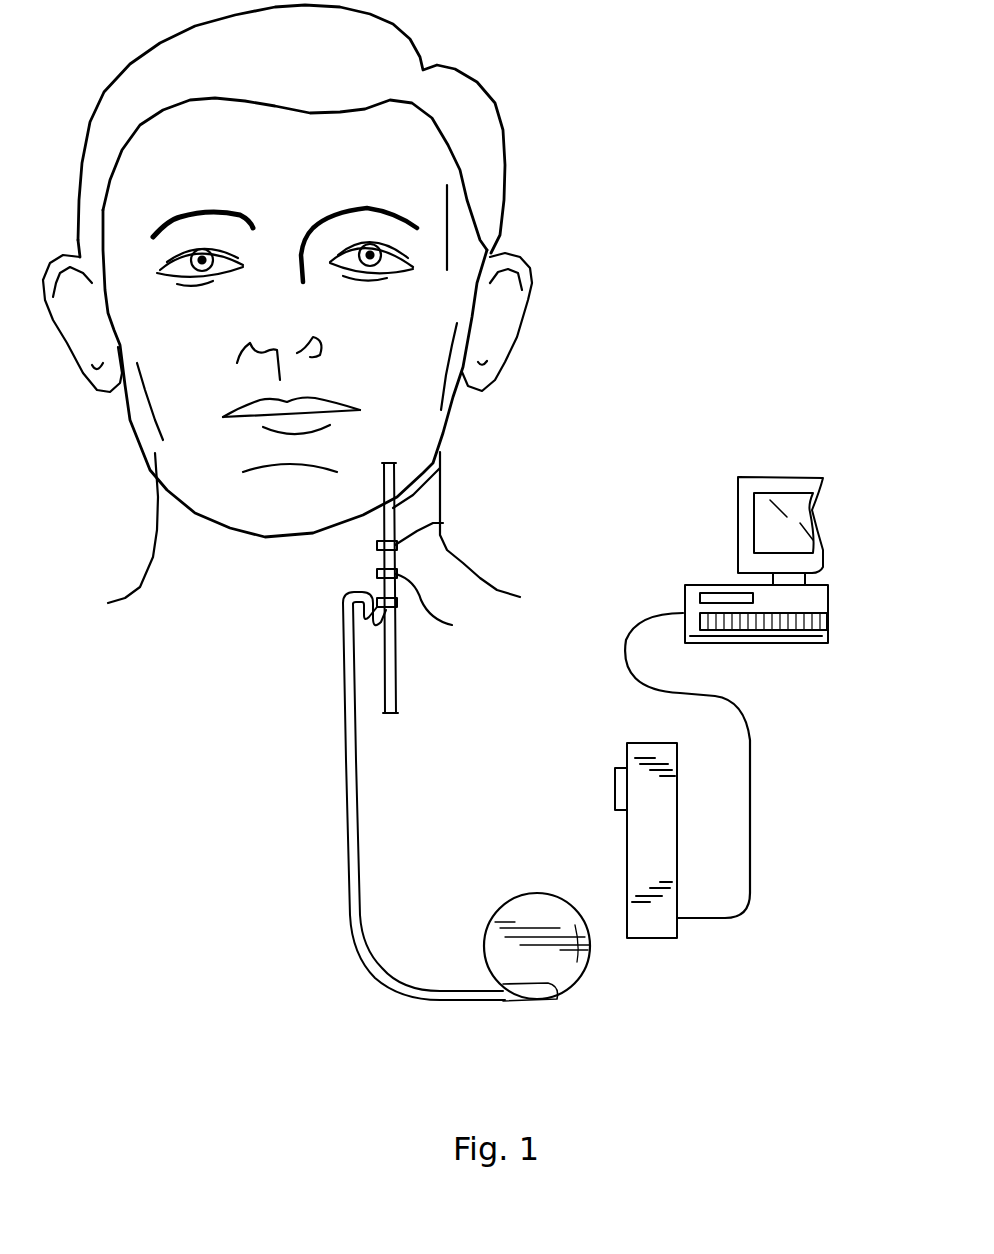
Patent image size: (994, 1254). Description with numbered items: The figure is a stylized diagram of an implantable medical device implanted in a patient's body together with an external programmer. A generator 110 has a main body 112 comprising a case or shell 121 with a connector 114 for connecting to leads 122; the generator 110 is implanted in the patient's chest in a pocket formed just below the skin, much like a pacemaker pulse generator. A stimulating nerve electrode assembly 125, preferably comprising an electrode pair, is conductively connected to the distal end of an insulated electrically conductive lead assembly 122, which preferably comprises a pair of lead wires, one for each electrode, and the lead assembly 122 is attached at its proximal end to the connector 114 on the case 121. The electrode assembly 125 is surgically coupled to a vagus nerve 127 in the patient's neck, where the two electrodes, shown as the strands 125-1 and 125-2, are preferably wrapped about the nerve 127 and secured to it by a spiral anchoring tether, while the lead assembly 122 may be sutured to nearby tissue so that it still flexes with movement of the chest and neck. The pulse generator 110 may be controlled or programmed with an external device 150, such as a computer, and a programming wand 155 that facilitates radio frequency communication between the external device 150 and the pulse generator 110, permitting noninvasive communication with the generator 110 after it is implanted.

The generator 110 is at (411, 835).
The main body 112 is at (565, 925).
The connector 114 is at (513, 1001).
The case 121 is at (507, 897).
The lead assembly 122 is at (343, 765).
The stimulating nerve electrode assembly 125 is at (367, 556).
The first strap 125-1 is at (442, 524).
The second strap 125-2 is at (461, 609).
The vagus nerve 127 is at (440, 481).
The external device 150 is at (807, 643).
The programming wand 155 is at (600, 763).